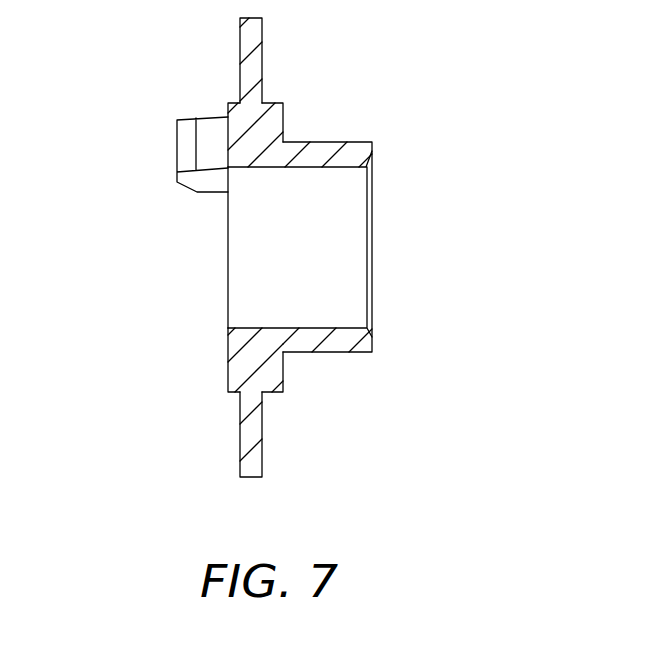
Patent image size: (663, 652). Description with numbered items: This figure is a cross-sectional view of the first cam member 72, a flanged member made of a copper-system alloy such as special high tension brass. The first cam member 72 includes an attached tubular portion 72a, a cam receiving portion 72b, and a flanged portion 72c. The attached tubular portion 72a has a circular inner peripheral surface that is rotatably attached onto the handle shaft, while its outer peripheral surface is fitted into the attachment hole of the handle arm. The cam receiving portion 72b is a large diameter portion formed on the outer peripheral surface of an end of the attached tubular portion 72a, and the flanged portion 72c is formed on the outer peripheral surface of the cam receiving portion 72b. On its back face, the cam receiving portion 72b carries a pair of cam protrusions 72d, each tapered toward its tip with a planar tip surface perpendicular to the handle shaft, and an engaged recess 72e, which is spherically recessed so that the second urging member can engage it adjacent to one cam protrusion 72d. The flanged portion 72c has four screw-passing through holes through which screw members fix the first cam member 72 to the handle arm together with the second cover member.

The first cam member 72 is at (277, 273).
The attached tubular portion 72a is at (325, 342).
The cam receiving portion 72b is at (278, 98).
The flanged portion 72c is at (240, 62).
The cam protrusion 72d is at (177, 145).
The engaged recess 72e is at (228, 346).